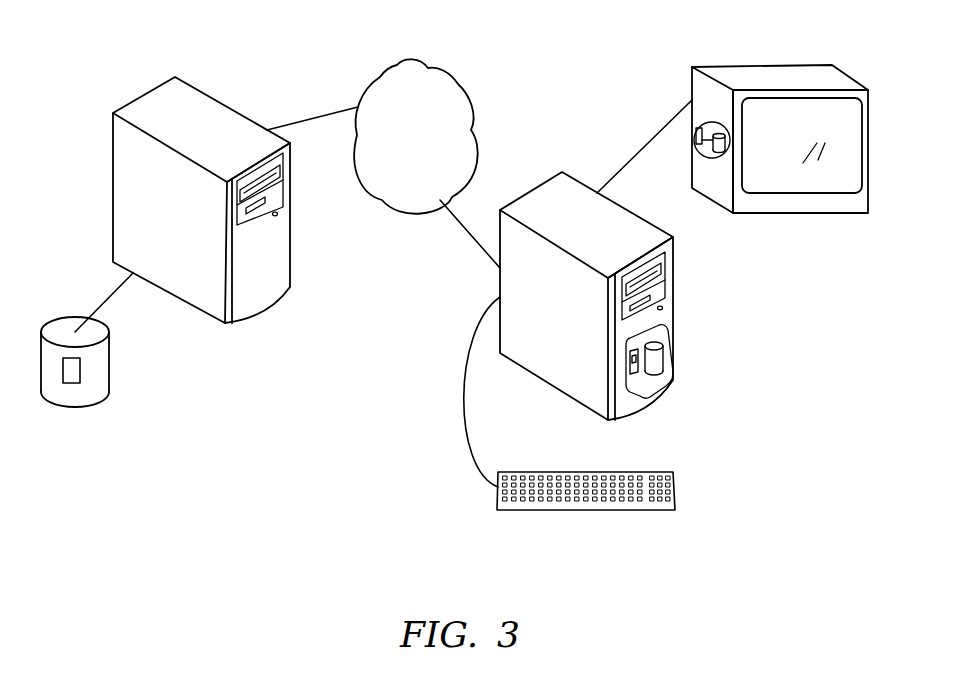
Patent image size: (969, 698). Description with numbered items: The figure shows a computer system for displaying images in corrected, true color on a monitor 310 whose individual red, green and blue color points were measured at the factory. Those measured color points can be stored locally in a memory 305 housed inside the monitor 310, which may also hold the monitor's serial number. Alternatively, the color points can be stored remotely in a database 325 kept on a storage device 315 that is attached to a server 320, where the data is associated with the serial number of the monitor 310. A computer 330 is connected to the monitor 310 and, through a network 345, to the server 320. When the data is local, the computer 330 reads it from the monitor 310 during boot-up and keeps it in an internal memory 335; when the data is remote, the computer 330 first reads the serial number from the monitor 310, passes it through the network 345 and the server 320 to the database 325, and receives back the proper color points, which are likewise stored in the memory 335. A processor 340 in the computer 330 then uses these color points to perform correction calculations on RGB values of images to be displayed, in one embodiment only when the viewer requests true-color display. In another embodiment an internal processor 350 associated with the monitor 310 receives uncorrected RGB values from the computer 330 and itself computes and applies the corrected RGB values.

The memory 305 is at (719, 150).
The monitor 310 is at (765, 62).
The storage device 315 is at (110, 362).
The server 320 is at (272, 307).
The database 325 is at (73, 373).
The computer 330 is at (540, 182).
The internal memory 335 is at (660, 357).
The processor 340 is at (637, 373).
The network 345 is at (453, 77).
The internal processor 350 is at (697, 152).